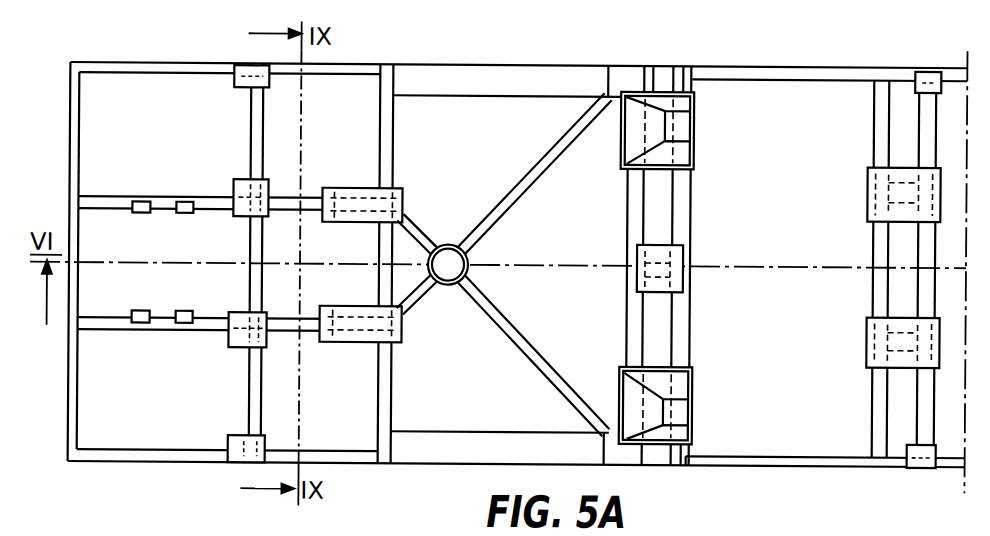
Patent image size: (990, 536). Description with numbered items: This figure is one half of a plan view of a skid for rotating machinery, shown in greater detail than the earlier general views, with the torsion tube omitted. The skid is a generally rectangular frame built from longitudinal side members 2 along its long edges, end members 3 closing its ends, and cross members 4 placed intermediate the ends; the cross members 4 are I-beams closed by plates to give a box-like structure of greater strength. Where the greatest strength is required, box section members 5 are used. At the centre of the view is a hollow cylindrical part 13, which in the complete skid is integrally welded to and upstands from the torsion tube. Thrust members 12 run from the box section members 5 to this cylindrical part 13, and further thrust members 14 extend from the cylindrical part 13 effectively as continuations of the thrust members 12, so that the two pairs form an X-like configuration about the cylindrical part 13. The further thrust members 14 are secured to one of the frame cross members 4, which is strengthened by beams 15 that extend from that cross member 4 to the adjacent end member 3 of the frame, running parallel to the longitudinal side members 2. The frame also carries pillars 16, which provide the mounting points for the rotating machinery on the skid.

The longitudinal side member 2 is at (331, 72).
The end member 3 is at (74, 297).
The cross member 4 is at (880, 123).
The box section member 5 is at (500, 80).
The thrust member 12 is at (531, 180).
The hollow cylindrical part 13 is at (450, 288).
The further thrust member 14 is at (420, 240).
The beam 15 is at (212, 202).
The pillar 16 is at (691, 131).